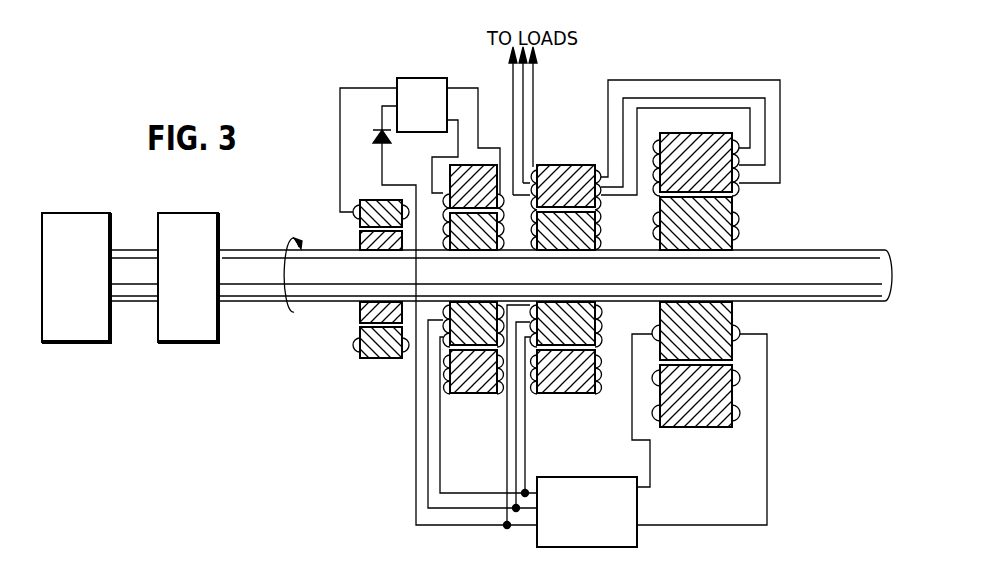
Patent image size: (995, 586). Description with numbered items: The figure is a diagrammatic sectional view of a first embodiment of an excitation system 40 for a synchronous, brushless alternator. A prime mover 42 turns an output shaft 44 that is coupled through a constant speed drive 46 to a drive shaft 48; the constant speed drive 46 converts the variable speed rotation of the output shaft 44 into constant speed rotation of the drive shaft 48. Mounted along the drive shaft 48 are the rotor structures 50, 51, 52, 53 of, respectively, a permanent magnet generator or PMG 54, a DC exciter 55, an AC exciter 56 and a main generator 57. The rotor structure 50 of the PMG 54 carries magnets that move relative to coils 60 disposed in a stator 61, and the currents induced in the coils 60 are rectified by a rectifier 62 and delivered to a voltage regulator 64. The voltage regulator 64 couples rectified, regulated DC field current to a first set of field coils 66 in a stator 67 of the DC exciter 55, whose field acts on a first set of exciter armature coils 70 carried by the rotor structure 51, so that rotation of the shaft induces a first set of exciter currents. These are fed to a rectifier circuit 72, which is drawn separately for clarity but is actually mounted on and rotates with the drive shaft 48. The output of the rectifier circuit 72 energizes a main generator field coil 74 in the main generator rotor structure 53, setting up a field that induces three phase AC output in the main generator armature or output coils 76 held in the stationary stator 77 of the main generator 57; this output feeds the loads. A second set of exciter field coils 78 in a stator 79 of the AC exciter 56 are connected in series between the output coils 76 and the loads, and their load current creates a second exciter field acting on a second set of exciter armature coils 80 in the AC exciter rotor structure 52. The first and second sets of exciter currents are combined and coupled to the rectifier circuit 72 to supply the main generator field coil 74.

The excitation system 40 is at (388, 445).
The prime mover 42 is at (88, 230).
The output shaft 44 is at (133, 265).
The constant speed drive 46 is at (185, 228).
The drive shaft 48 is at (255, 288).
The rotor structure of the PMG 50 is at (360, 245).
The rotor structure of the DC exciter 51 is at (460, 240).
The AC exciter rotor structure 52 is at (582, 243).
The main generator rotor structure 53 is at (718, 246).
The permanent magnet generator (PMG) 54 is at (381, 308).
The DC exciter 55 is at (473, 327).
The AC exciter 56 is at (572, 315).
The main generator 57 is at (745, 220).
The coils 60 is at (355, 345).
The stator 61 is at (370, 352).
The rectifier 62 is at (378, 128).
The voltage regulator 64 is at (422, 78).
The first set of field coils 66 is at (445, 200).
The stator 67 is at (451, 209).
The first set of exciter armature coils 70 is at (517, 250).
The rectifier circuit 72 is at (627, 534).
The main generator field coil 74 is at (741, 327).
The main generator armature or output coils 76 is at (741, 410).
The stator 77 is at (697, 425).
The second set of exciter field coils 78 is at (602, 382).
The stator 79 is at (540, 398).
The second set of exciter armature coils 80 is at (602, 312).